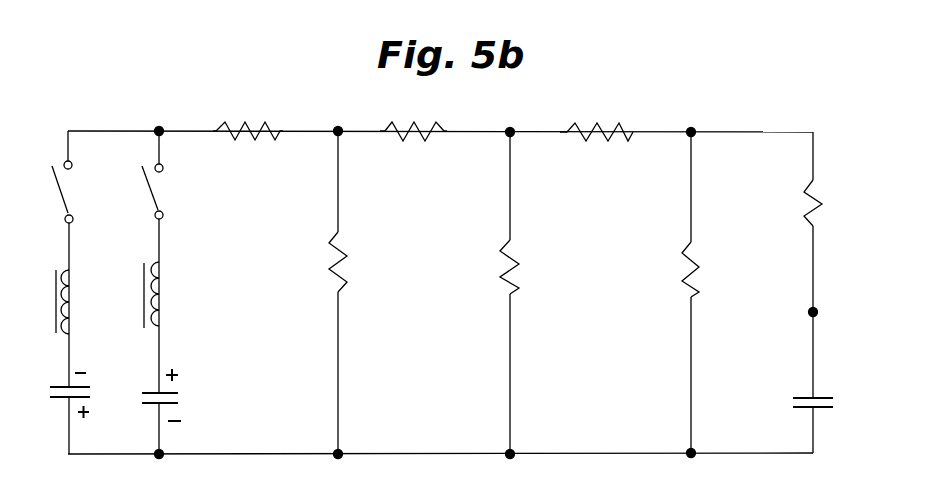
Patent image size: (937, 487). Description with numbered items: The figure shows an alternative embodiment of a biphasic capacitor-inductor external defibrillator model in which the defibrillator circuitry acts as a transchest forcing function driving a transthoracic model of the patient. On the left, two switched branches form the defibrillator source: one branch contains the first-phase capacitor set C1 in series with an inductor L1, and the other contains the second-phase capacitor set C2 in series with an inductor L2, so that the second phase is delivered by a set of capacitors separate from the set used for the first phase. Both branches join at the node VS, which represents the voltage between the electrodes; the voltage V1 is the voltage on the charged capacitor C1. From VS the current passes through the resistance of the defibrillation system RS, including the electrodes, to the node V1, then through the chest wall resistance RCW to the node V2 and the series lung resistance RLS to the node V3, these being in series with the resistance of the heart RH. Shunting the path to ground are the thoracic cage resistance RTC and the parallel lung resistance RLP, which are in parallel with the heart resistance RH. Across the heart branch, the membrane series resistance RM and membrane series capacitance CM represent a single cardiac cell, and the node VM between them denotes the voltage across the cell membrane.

The node voltage between the electrodes VS is at (163, 108).
The voltage on the charged capacitor V1 is at (343, 108).
The voltage node V2 is at (513, 108).
The voltage node V3 is at (693, 108).
The voltage across the cell membrane VM is at (841, 310).
The resistance of the defibrillation system RS is at (248, 157).
The resistance of the chest wall RCW is at (422, 157).
The series resistance of the lungs RLS is at (598, 158).
The resistance of the thoracic cage RTC is at (371, 261).
The parallel resistance of the lungs RLP is at (540, 262).
The resistance of the heart RH is at (715, 265).
The membrane series resistance RM is at (838, 203).
The membrane series capacitance CM is at (836, 405).
The inductor L1 is at (40, 302).
The inductor L2 is at (175, 295).
The phi-one capacitor set C1 is at (53, 395).
The phi-two capacitor set C2 is at (182, 395).